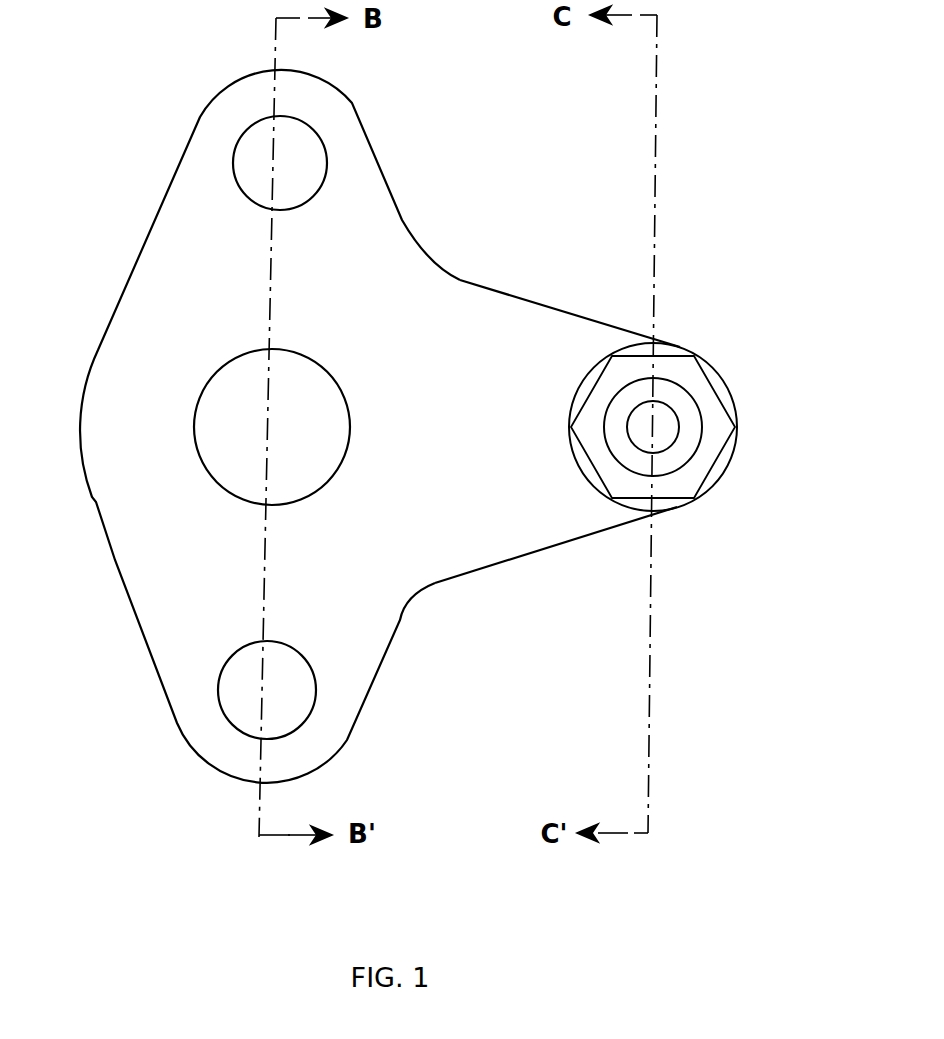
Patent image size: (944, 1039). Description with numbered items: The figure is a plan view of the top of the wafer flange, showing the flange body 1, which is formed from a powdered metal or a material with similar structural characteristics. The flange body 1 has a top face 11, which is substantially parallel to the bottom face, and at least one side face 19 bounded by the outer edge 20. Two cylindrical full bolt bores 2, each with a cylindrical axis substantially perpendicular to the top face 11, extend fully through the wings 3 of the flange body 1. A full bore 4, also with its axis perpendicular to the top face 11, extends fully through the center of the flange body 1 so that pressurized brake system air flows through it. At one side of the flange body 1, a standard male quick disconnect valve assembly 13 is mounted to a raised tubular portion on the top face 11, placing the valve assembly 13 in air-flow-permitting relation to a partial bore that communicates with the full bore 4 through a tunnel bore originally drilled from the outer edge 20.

The flange body 1 is at (402, 257).
The cylindrical full bolt bores 2 is at (298, 157).
The wings 3 is at (222, 115).
The full bore 4 is at (227, 422).
The top face 11 is at (508, 539).
The male quick disconnect valve assembly 13 is at (687, 368).
The side face 19 is at (488, 285).
The outer edge 20 is at (737, 418).